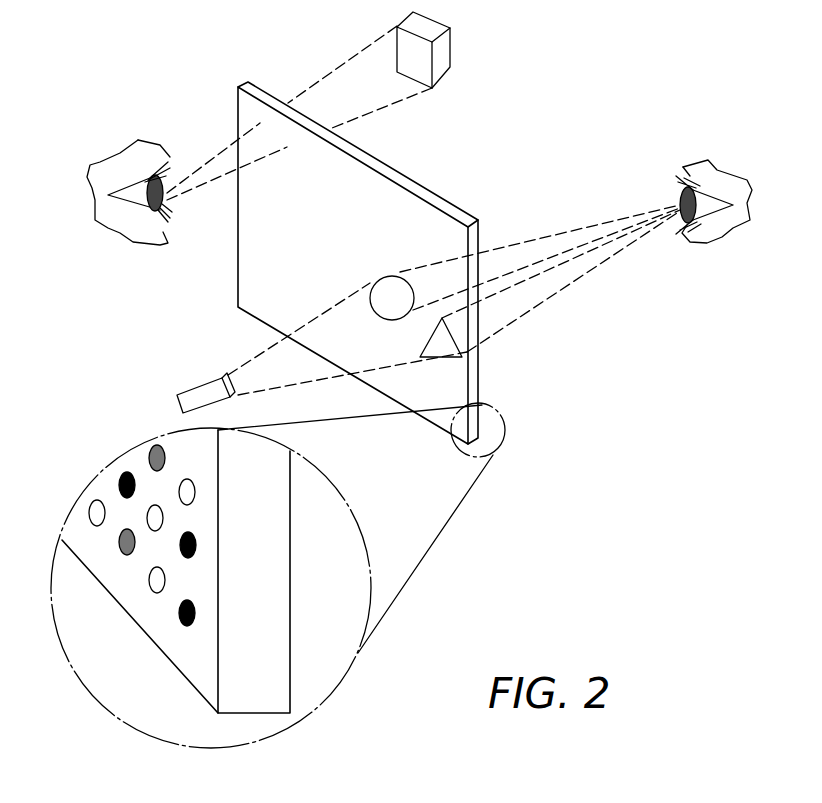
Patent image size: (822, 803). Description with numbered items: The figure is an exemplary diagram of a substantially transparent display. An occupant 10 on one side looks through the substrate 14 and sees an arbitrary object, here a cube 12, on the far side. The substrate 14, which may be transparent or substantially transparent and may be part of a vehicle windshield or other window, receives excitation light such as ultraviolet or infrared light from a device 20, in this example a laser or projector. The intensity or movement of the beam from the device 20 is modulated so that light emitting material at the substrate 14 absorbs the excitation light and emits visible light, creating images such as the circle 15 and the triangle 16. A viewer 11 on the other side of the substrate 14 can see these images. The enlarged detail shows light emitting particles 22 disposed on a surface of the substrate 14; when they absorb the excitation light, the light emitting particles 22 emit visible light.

The occupant 10 is at (122, 180).
The viewer 11 is at (717, 187).
The cube 12 is at (443, 53).
The substrate 14 is at (443, 205).
The circle 15 is at (387, 302).
The triangle 16 is at (443, 345).
The device 20 is at (228, 377).
The light emitting particles 22 is at (153, 458).